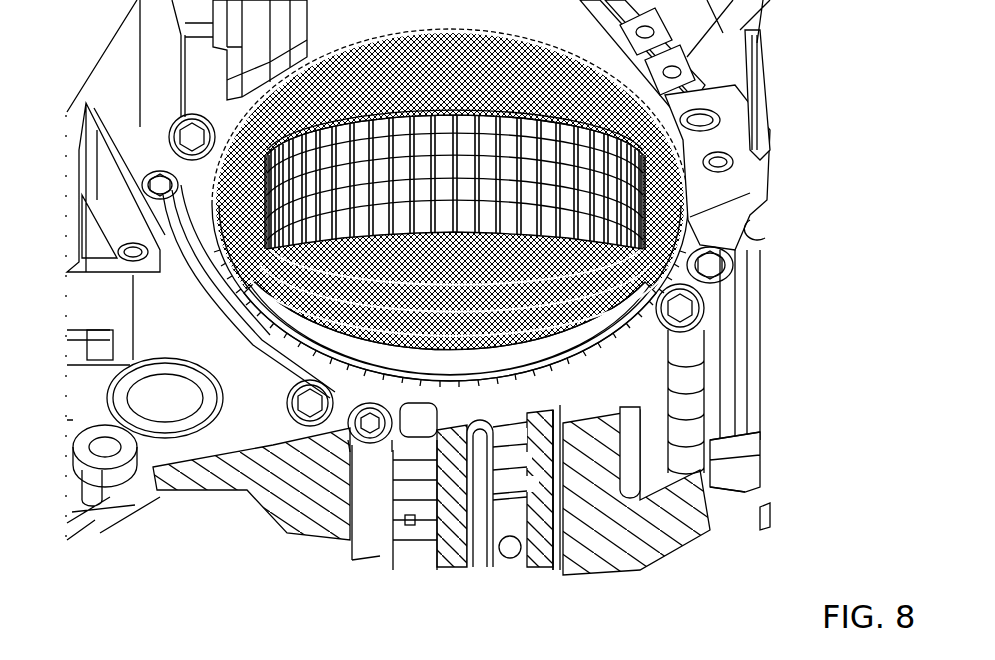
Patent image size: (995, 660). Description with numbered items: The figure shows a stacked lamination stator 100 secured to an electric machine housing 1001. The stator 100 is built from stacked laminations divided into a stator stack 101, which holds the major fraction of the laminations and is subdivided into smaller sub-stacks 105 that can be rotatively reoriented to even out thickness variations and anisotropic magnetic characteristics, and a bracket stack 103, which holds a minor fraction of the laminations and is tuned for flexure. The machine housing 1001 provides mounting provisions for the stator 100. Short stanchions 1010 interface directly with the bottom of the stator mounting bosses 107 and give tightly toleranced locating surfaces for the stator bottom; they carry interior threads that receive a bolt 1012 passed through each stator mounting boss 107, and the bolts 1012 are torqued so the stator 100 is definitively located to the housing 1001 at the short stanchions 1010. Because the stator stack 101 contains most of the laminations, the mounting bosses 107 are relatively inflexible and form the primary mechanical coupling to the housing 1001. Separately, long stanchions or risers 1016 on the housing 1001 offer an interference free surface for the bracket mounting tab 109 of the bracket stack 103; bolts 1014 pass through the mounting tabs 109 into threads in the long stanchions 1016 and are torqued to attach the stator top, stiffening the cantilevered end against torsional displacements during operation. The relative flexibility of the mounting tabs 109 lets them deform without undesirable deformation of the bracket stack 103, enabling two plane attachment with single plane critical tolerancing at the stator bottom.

The stator 100 is at (575, 346).
The stator stack 101 is at (498, 470).
The bracket stack 103 is at (477, 382).
The sub-stacks 105 is at (470, 448).
The stator mounting bosses 107 is at (687, 372).
The bracket mounting tab 109 is at (360, 440).
The electric machine housing 1001 is at (682, 522).
The short stanchions 1010 is at (693, 452).
The bolt 1012 is at (180, 120).
The bolts 1014 is at (150, 170).
The long stanchions 1016 is at (385, 540).